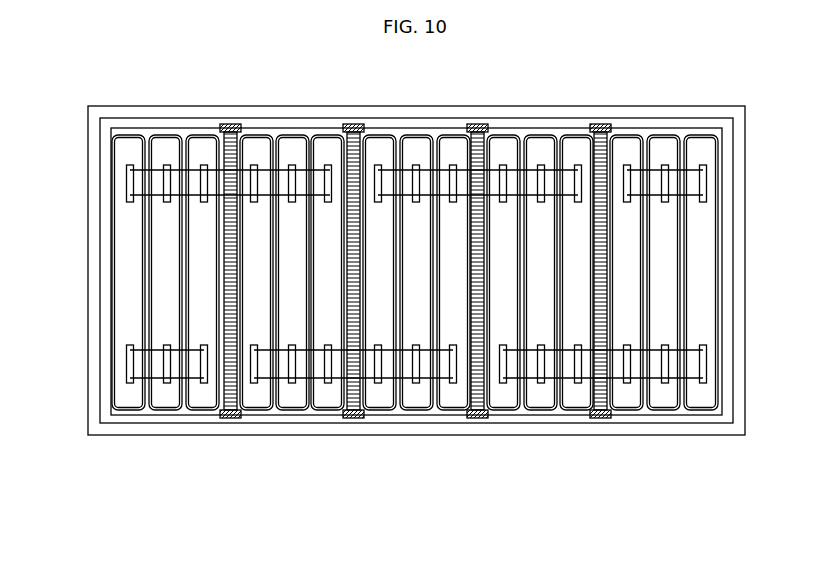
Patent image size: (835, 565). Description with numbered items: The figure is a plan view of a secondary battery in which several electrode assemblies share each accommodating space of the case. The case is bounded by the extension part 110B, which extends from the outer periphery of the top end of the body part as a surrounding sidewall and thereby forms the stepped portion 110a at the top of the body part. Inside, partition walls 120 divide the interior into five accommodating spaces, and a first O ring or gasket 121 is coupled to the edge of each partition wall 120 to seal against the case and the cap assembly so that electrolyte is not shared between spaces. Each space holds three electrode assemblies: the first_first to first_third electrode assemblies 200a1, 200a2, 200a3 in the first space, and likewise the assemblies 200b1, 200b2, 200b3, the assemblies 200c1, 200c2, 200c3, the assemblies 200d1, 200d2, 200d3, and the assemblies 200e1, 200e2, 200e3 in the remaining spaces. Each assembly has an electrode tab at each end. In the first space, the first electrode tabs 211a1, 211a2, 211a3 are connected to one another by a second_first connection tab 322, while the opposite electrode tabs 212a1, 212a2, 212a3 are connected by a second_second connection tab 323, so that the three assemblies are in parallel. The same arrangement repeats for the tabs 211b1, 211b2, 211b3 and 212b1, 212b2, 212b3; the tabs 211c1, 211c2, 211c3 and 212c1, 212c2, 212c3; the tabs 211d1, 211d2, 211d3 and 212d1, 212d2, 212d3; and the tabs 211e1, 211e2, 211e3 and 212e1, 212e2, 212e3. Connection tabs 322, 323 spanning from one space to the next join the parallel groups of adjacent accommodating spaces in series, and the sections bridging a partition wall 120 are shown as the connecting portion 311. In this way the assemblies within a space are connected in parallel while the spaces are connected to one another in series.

The extension part 110B is at (110, 112).
The stepped portion 110a is at (160, 125).
The partition wall 120 is at (229, 125).
The first O ring or gasket 121 is at (221, 127).
The first_first electrode assembly 200a1 is at (125, 394).
The first_second electrode assembly 200a2 is at (163, 408).
The first_third electrode assembly 200a3 is at (197, 405).
The battery cell 200b1 is at (247, 403).
The battery cell 200b2 is at (280, 404).
The battery cell 200b3 is at (320, 404).
The battery cell 200c1 is at (382, 406).
The battery cell 200c2 is at (412, 405).
The battery cell 200c3 is at (452, 404).
The battery cell 200d1 is at (516, 403).
The battery cell 200d2 is at (556, 404).
The battery cell 200d3 is at (590, 400).
The battery cell 200e1 is at (637, 405).
The battery cell 200e2 is at (673, 405).
The battery cell 200e3 is at (710, 393).
The first electrode tab 211a1 is at (126, 373).
The first electrode tab 211a2 is at (163, 362).
The first electrode tab 211a3 is at (202, 357).
The first electrode terminal 211b1 is at (256, 165).
The first electrode terminal 211b2 is at (292, 165).
The first electrode terminal 211b3 is at (328, 165).
The first electrode terminal 211c1 is at (377, 384).
The first electrode terminal 211c2 is at (416, 384).
The first electrode terminal 211c3 is at (454, 384).
The first electrode terminal 211d1 is at (504, 165).
The first electrode terminal 211d2 is at (542, 165).
The first electrode terminal 211d3 is at (579, 165).
The first electrode terminal 211e1 is at (632, 355).
The first electrode terminal 211e2 is at (669, 360).
The first electrode terminal 211e3 is at (707, 372).
The electrode tab 212a1 is at (126, 190).
The electrode tab 212a2 is at (163, 171).
The electrode tab 212a3 is at (202, 166).
The second electrode terminal 212b1 is at (251, 383).
The second electrode terminal 212b2 is at (290, 384).
The second electrode terminal 212b3 is at (326, 384).
The second electrode terminal 212c1 is at (379, 165).
The second electrode terminal 212c2 is at (417, 165).
The second electrode terminal 212c3 is at (454, 165).
The second electrode terminal 212d1 is at (503, 385).
The second electrode terminal 212d2 is at (543, 385).
The second electrode terminal 212d3 is at (582, 383).
The second electrode terminal 212e1 is at (629, 165).
The second electrode terminal 212e2 is at (666, 165).
The second electrode terminal 212e3 is at (707, 187).
The second O ring or gasket 311 is at (234, 188).
The second_first connection tab 322 is at (315, 190).
The second_second connection tab 323 is at (193, 190).